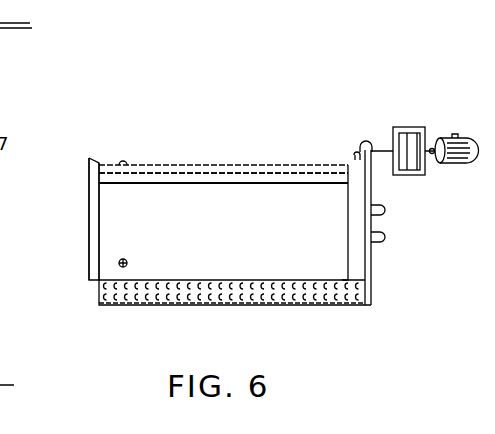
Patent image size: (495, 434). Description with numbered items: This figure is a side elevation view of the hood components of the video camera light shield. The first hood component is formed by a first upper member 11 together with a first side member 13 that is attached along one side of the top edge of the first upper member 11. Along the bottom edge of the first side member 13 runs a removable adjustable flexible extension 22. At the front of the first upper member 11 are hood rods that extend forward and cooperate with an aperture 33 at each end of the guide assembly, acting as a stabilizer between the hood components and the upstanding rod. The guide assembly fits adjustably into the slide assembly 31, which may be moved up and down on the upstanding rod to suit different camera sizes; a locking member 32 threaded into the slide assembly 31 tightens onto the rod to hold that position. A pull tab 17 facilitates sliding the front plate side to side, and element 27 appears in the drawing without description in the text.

The first upper member 11 is at (243, 163).
The first side member 13 is at (88, 235).
The pull tab 17 is at (385, 222).
The removable adjustable flexible extension 22 is at (95, 298).
The top rail 27 is at (223, 180).
The slide assembly 31 is at (406, 127).
The locking member 32 is at (455, 134).
The aperture 33 is at (368, 145).